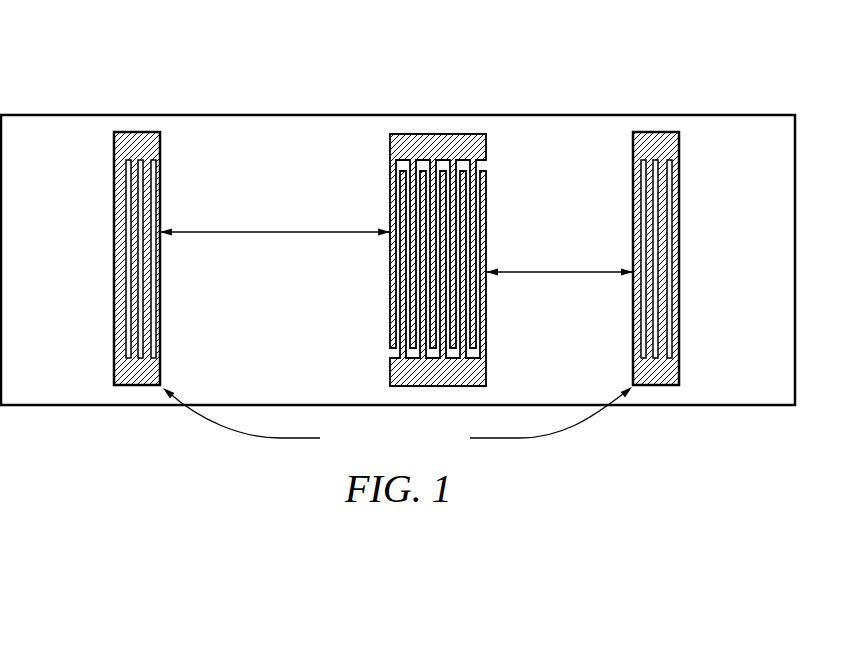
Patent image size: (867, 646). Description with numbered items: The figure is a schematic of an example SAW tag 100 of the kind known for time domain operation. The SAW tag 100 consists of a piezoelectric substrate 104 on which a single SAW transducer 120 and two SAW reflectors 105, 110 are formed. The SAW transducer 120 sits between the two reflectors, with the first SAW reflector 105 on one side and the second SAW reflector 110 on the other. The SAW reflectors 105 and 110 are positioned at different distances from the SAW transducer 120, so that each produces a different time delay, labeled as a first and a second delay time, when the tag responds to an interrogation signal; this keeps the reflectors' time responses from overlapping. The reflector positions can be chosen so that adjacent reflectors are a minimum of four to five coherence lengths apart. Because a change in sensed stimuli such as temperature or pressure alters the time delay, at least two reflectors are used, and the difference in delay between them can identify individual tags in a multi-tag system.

The SAW tag 100 is at (190, 50).
The piezoelectric substrate 104 is at (753, 266).
The SAW reflector 105 is at (130, 385).
The SAW reflector 110 is at (668, 385).
The SAW transducer 120 is at (408, 134).